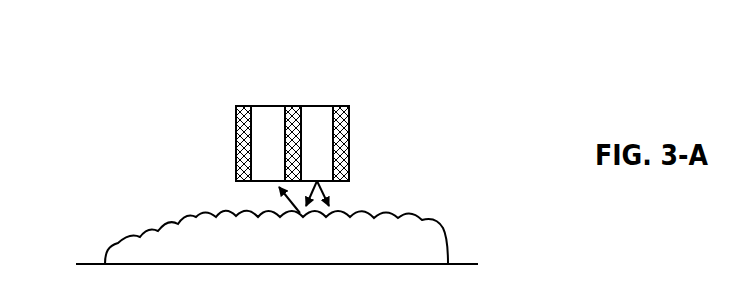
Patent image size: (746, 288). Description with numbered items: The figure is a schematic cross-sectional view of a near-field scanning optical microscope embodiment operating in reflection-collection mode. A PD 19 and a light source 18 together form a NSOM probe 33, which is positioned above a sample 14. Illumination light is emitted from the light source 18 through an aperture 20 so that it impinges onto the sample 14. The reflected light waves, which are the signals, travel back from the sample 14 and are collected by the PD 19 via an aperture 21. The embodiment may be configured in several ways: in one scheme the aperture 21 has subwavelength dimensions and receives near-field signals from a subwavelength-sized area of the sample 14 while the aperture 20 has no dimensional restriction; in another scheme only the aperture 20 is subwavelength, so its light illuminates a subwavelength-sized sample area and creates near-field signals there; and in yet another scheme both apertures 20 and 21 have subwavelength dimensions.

The NSOM probe 33 is at (352, 96).
The PD 19 is at (270, 120).
The light source 18 is at (322, 146).
The aperture 21 is at (263, 181).
The aperture 20 is at (322, 181).
The sample 14 is at (277, 237).